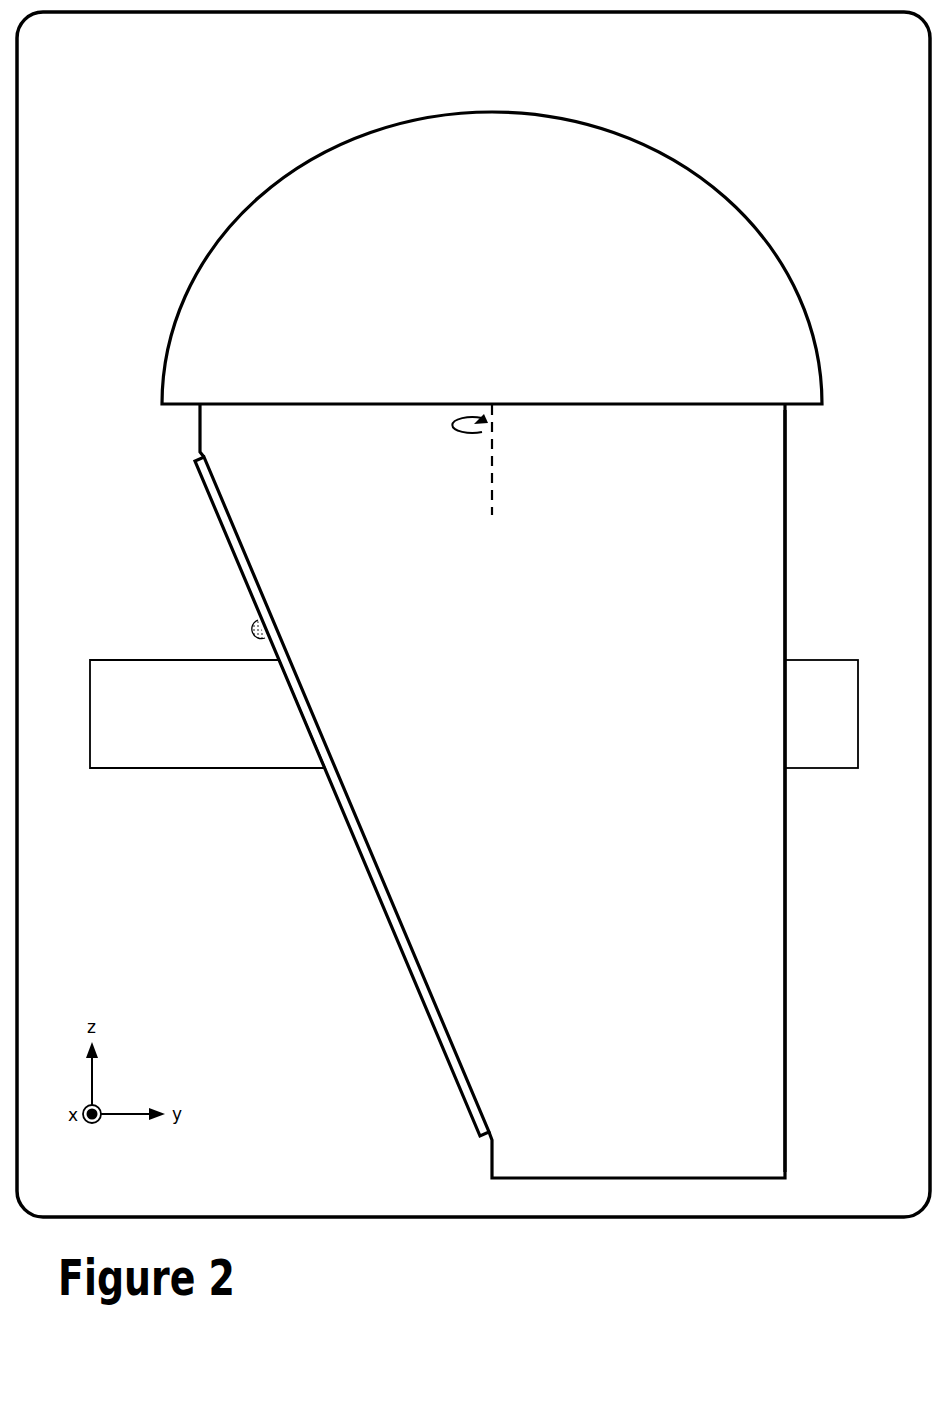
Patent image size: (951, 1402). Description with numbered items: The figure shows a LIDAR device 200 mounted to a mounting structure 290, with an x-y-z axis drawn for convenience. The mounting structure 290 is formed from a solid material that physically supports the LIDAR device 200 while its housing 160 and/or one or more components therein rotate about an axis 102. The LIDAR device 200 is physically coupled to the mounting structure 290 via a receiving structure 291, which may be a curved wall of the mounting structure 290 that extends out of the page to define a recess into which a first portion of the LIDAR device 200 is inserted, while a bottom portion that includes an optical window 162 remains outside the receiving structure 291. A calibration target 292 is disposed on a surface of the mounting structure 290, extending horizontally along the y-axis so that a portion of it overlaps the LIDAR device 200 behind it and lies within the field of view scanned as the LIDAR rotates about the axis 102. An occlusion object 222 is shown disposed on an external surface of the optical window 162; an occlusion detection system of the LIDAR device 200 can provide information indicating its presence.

The mounting structure 290 is at (473, 614).
The receiving structure 291 is at (492, 258).
The LIDAR device 200 is at (492, 791).
The housing 160 is at (785, 480).
The optical window 162 is at (218, 528).
The occlusion object 222 is at (256, 620).
The axis 102 is at (495, 405).
The calibration target 292 is at (474, 714).